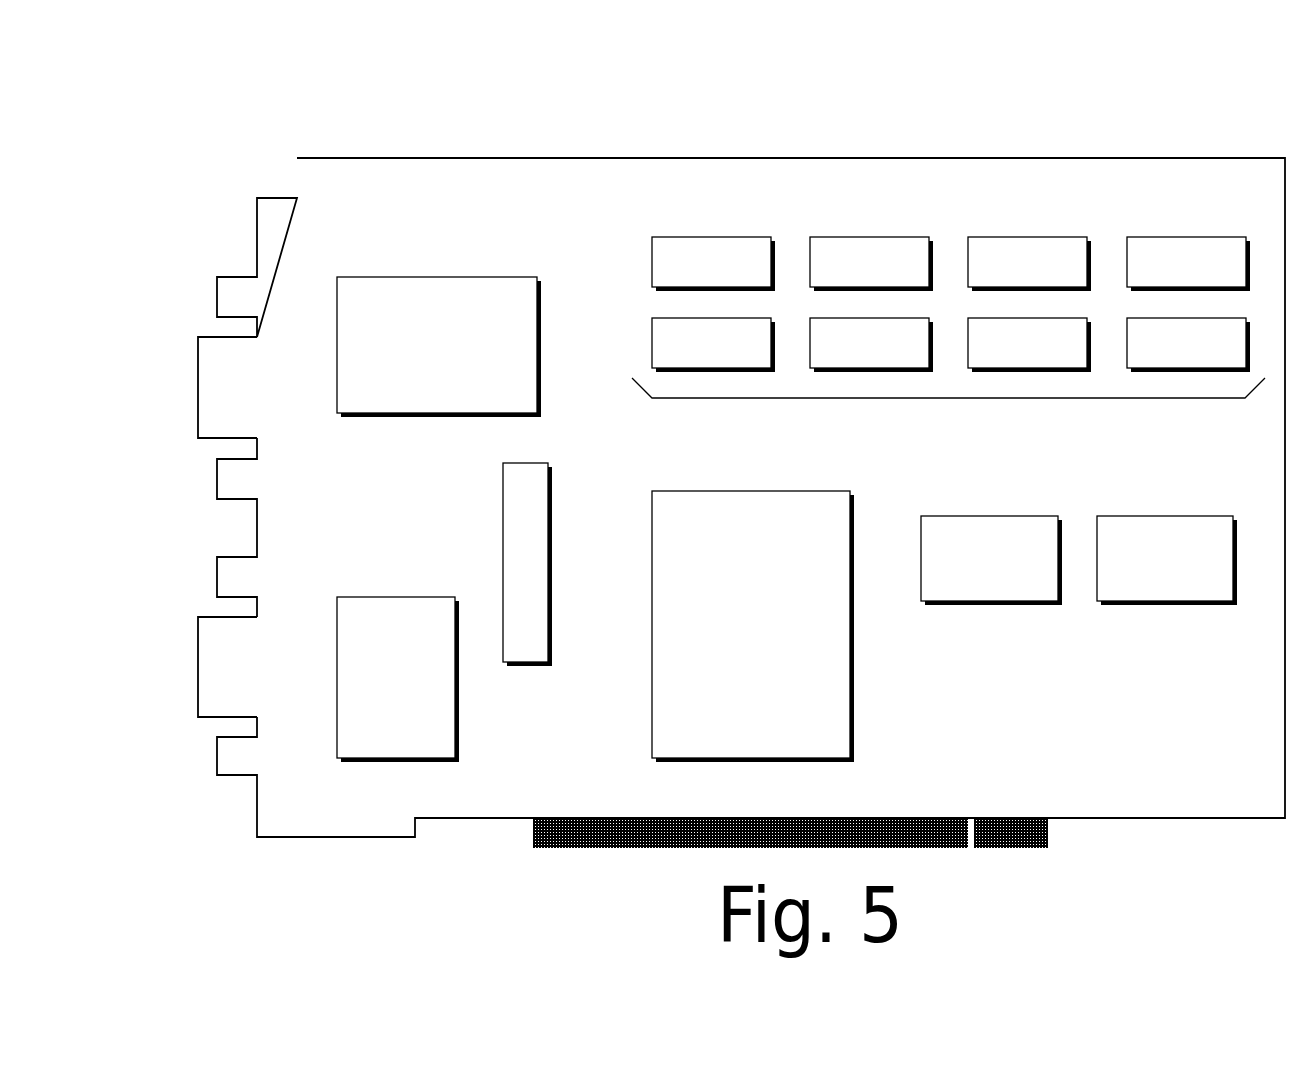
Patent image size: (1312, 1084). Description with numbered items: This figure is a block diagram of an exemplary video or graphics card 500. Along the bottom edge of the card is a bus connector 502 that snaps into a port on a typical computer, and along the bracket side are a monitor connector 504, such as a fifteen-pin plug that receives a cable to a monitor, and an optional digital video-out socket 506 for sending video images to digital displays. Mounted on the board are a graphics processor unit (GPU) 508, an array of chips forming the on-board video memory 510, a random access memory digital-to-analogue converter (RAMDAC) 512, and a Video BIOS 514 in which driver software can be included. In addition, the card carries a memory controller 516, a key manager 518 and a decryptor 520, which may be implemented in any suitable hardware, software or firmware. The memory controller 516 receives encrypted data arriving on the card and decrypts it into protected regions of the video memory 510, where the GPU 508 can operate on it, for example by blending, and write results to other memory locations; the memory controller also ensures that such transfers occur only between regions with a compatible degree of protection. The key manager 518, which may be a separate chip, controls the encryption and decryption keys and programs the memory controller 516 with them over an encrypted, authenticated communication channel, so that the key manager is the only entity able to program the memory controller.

The video card 500 is at (339, 66).
The bus connector 502 is at (632, 850).
The monitor connector 504 is at (197, 617).
The digital video-out socket 506 is at (197, 337).
The graphics processor unit 508 is at (746, 490).
The video memory 510 is at (974, 435).
The random access memory digital-to-analogue converter 512 is at (437, 276).
The Video BIOS 514 is at (395, 596).
The memory controller 516 is at (988, 605).
The key manager 518 is at (1163, 605).
The decryptor 520 is at (526, 462).